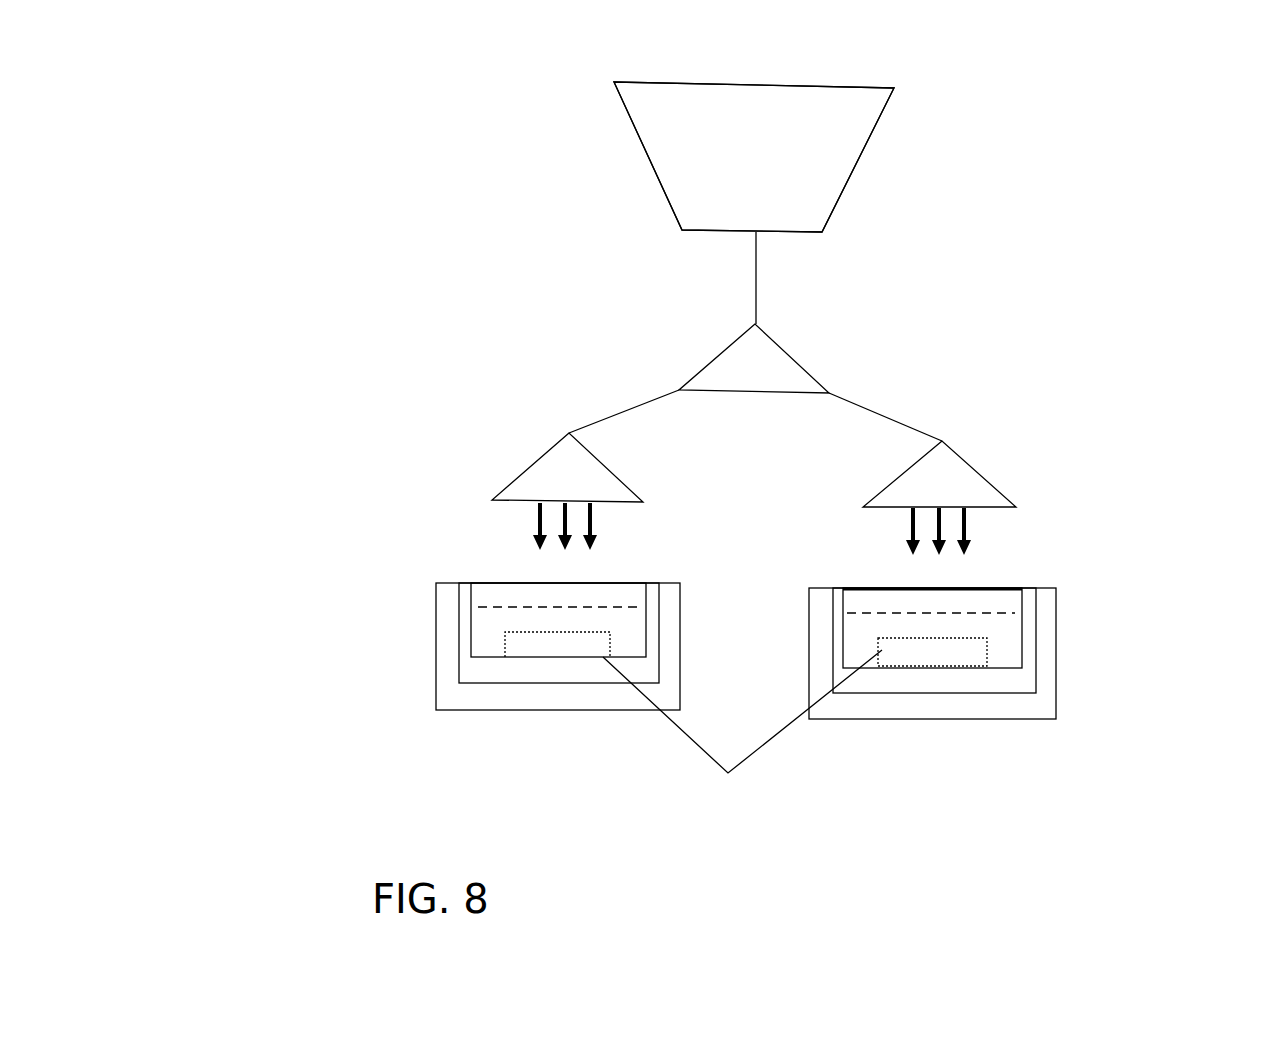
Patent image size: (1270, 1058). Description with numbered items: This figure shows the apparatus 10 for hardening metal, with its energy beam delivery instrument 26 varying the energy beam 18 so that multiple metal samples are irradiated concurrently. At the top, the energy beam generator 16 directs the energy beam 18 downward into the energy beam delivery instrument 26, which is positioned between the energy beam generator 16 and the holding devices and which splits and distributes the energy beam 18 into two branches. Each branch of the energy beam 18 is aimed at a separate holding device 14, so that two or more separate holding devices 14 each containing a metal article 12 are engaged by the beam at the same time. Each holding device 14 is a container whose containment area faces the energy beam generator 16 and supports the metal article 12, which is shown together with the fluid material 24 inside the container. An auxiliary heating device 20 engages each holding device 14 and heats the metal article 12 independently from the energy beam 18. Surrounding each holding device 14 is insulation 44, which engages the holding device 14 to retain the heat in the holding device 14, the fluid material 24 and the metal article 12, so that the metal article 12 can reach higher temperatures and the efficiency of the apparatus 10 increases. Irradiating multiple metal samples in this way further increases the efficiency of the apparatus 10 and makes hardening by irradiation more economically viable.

The apparatus 10 is at (1053, 128).
The metal article 12 is at (728, 773).
The holding device 14 is at (470, 636).
The energy beam generator 16 is at (643, 149).
The energy beam 18 is at (535, 523).
The auxiliary heating device 20 is at (540, 683).
The fluid material 24 is at (488, 607).
The energy beam delivery instrument 26 is at (993, 342).
The insulation 44 is at (436, 710).